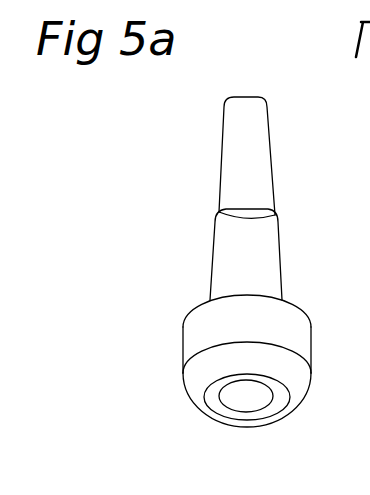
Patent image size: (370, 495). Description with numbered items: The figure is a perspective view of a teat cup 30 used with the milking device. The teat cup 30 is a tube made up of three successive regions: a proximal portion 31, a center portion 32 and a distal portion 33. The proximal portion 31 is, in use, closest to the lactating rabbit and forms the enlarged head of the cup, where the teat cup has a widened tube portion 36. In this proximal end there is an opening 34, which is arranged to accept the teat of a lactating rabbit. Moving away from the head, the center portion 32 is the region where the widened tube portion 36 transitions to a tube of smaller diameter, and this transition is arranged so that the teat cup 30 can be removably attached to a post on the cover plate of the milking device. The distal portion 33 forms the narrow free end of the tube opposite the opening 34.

The teat cup 30 is at (207, 194).
The proximal portion 31 is at (300, 347).
The center portion 32 is at (268, 263).
The distal portion 33 is at (258, 152).
The opening 34 is at (277, 405).
The widened tube portion 36 is at (242, 400).